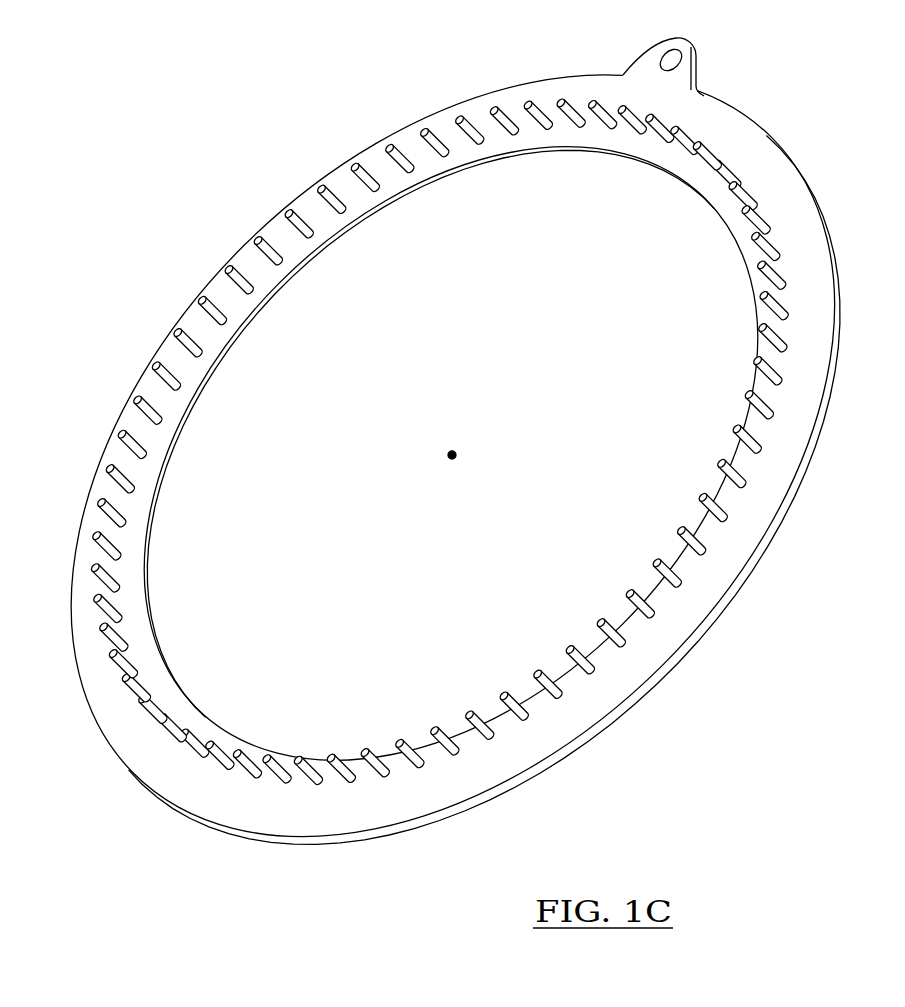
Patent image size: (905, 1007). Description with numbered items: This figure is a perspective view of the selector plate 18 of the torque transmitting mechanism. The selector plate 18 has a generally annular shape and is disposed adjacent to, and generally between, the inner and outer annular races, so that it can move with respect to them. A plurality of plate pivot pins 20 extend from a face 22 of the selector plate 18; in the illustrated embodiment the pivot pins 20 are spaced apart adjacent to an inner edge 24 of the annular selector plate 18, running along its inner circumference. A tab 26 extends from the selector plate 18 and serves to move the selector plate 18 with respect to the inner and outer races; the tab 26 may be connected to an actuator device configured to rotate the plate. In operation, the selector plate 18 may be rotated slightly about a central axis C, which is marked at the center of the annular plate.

The selector plate 18 is at (452, 491).
The plate pivot pins 20 is at (107, 470).
The face 22 is at (722, 568).
The inner edge 24 is at (318, 257).
The tab 26 is at (680, 80).
The central axis C is at (452, 458).